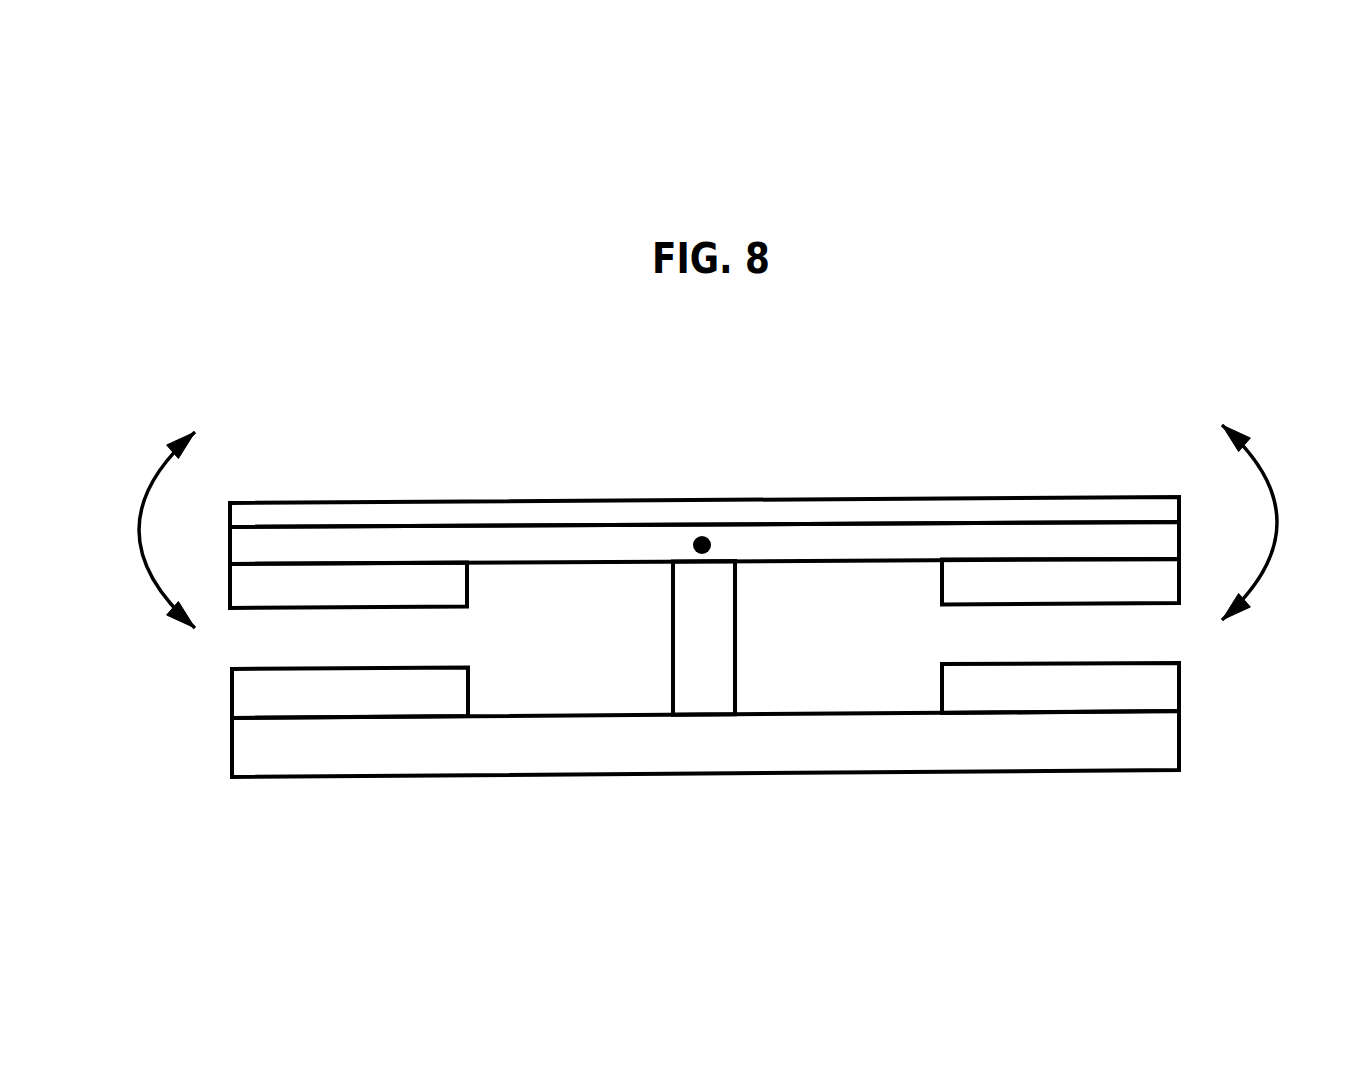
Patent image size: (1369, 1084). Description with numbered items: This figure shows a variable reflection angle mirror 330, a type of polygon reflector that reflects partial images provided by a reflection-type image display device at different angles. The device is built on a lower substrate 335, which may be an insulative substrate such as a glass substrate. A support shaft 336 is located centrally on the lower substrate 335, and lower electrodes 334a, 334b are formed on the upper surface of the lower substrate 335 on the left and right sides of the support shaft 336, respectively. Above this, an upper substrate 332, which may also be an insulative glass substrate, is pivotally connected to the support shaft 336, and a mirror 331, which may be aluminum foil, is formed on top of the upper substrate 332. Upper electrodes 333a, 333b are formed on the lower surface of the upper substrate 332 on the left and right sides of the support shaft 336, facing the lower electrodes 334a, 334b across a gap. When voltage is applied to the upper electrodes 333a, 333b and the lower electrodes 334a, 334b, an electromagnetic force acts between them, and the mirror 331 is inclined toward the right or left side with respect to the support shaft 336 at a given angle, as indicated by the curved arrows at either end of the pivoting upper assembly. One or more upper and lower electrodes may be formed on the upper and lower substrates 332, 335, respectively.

The variable reflection angle mirror 330 is at (331, 350).
The mirror 331 is at (430, 501).
The upper substrate 332 is at (603, 537).
The upper electrode 333a is at (278, 585).
The upper electrode 333b is at (1008, 582).
The lower electrode 334a is at (238, 697).
The lower electrode 334b is at (1168, 678).
The lower substrate 335 is at (1172, 743).
The support shaft 336 is at (723, 643).